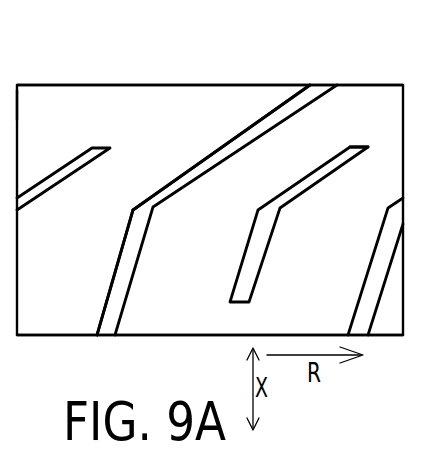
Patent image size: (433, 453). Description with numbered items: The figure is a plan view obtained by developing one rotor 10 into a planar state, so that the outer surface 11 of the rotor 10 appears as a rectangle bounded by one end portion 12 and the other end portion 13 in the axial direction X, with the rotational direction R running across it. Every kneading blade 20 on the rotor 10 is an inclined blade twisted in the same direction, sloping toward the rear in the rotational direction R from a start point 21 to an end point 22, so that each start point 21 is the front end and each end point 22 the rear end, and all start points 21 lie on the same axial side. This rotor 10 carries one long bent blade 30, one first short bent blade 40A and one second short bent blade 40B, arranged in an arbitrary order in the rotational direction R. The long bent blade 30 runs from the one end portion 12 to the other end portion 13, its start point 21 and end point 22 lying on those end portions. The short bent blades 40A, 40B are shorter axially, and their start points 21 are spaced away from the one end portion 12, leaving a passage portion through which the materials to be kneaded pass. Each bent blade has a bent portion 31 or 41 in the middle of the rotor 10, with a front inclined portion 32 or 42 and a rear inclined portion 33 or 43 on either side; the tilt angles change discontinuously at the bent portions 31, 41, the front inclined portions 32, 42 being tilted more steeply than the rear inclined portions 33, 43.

The rotor 10 is at (279, 80).
The sliding surface 11 is at (47, 100).
The one end portion 12 is at (128, 85).
The other end portion 13 is at (145, 337).
The kneading blade 20 is at (243, 272).
The start point 21 is at (100, 145).
The end point 22 is at (107, 335).
The long bent blade 30 is at (180, 192).
The bent portion 31 is at (146, 205).
The front inclined portion 32 is at (215, 160).
The rear inclined portion 33 is at (127, 243).
The first short bent blade 40A is at (383, 218).
The second short bent blade 40B is at (295, 190).
The bent portion 41 is at (262, 206).
The front inclined portion 42 is at (78, 165).
The rear inclined portion 43 is at (253, 243).